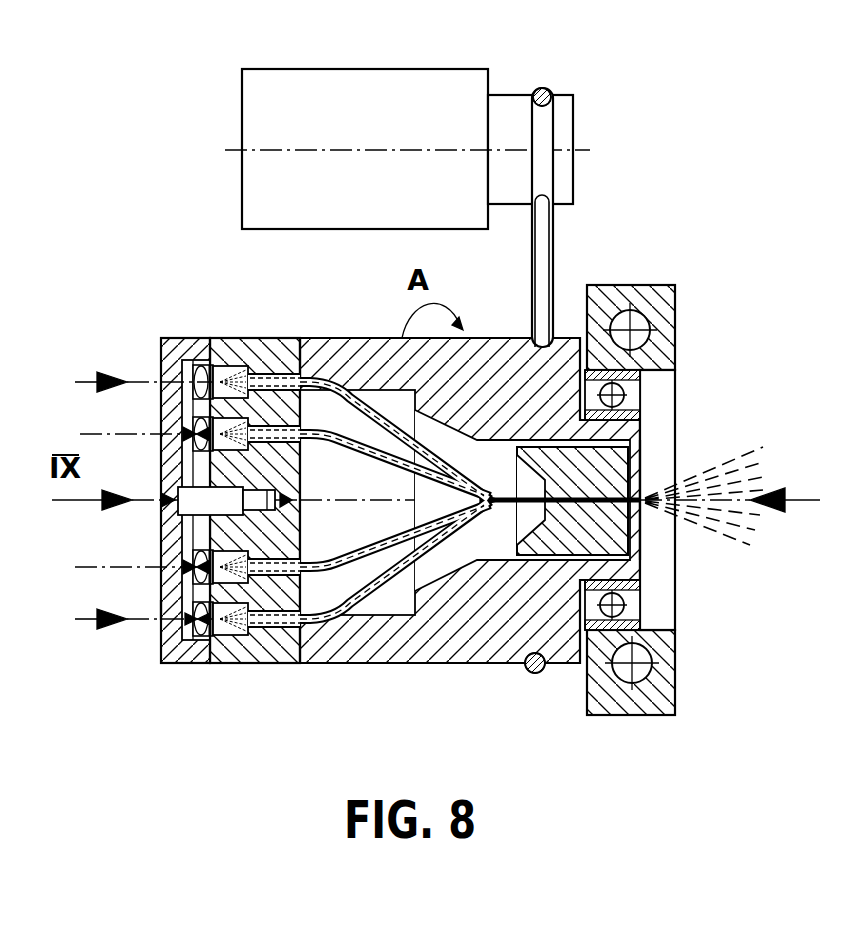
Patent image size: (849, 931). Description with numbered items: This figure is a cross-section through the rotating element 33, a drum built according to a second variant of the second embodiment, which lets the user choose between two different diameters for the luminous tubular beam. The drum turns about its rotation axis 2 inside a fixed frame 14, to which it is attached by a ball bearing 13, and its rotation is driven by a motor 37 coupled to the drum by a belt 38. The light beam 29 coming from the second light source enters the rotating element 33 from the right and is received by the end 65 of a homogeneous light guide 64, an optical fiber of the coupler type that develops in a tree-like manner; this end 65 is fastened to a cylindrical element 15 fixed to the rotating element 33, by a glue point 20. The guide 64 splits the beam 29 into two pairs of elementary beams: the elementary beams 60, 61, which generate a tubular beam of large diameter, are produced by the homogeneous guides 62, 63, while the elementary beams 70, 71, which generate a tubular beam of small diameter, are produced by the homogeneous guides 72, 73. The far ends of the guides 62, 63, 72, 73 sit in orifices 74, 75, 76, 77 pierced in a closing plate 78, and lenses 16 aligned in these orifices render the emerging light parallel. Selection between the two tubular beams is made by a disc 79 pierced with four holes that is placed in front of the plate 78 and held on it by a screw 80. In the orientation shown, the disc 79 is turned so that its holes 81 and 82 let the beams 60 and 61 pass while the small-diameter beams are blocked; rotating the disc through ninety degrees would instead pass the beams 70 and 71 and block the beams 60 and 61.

The rotation axis 2 is at (798, 497).
The ball bearing 13 is at (641, 392).
The fixed frame 14 is at (662, 292).
The cylindrical element 15 is at (641, 455).
The lens 16 is at (182, 377).
The glue point 20 is at (513, 528).
The light beam 29 is at (751, 548).
The rotating element 33 is at (345, 328).
The motor 37 is at (358, 100).
The belt 38 is at (540, 260).
The elementary beam 60 is at (90, 619).
The elementary beam 61 is at (93, 380).
The homogeneous guide 62 is at (370, 597).
The homogeneous guide 63 is at (390, 400).
The homogeneous light guide 64 is at (462, 458).
The end of guide 65 is at (643, 555).
The elementary beam 70 is at (83, 567).
The elementary beam 71 is at (92, 433).
The homogeneous guide 72 is at (362, 545).
The homogeneous guide 73 is at (378, 460).
The orifice 74 is at (283, 633).
The orifice 75 is at (300, 528).
The orifice 76 is at (298, 463).
The orifice 77 is at (262, 345).
The closing plate 78 is at (215, 340).
The disc 79 is at (177, 348).
The screw 80 is at (203, 483).
The hole 81 is at (162, 392).
The hole 82 is at (158, 608).